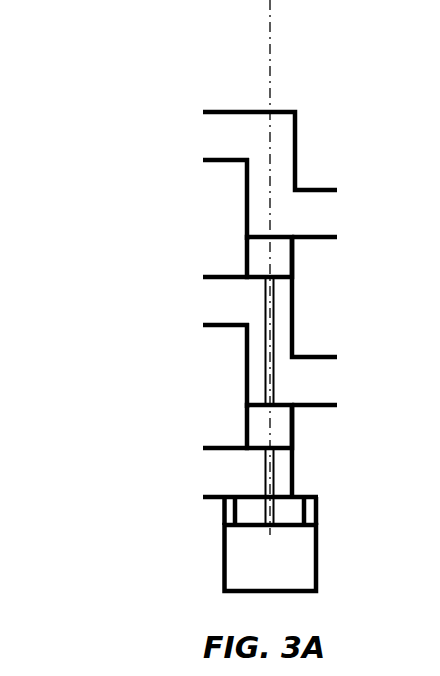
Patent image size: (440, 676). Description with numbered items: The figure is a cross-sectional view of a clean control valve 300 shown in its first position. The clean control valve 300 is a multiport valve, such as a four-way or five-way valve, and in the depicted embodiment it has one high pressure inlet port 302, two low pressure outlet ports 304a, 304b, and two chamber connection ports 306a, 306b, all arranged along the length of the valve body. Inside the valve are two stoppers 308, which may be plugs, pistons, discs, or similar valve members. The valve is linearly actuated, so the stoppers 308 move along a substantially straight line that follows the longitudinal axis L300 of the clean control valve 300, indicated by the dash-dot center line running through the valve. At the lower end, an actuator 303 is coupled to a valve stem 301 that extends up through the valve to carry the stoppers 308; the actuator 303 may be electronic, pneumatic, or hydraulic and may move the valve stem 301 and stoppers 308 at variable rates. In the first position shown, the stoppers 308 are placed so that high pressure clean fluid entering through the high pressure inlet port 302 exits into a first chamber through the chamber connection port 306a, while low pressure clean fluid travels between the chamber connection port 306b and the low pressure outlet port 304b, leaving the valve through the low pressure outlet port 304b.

The clean control valve 300 is at (187, 70).
The longitudinal axis L300 is at (272, 44).
The low pressure outlet port 304b is at (203, 137).
The high pressure inlet port 302 is at (203, 307).
The stoppers 308 is at (265, 260).
The chamber connection port 306b is at (322, 221).
The chamber connection port 306a is at (323, 392).
The low pressure outlet port 304a is at (201, 489).
The valve stem 301 is at (265, 512).
The actuator 303 is at (252, 567).